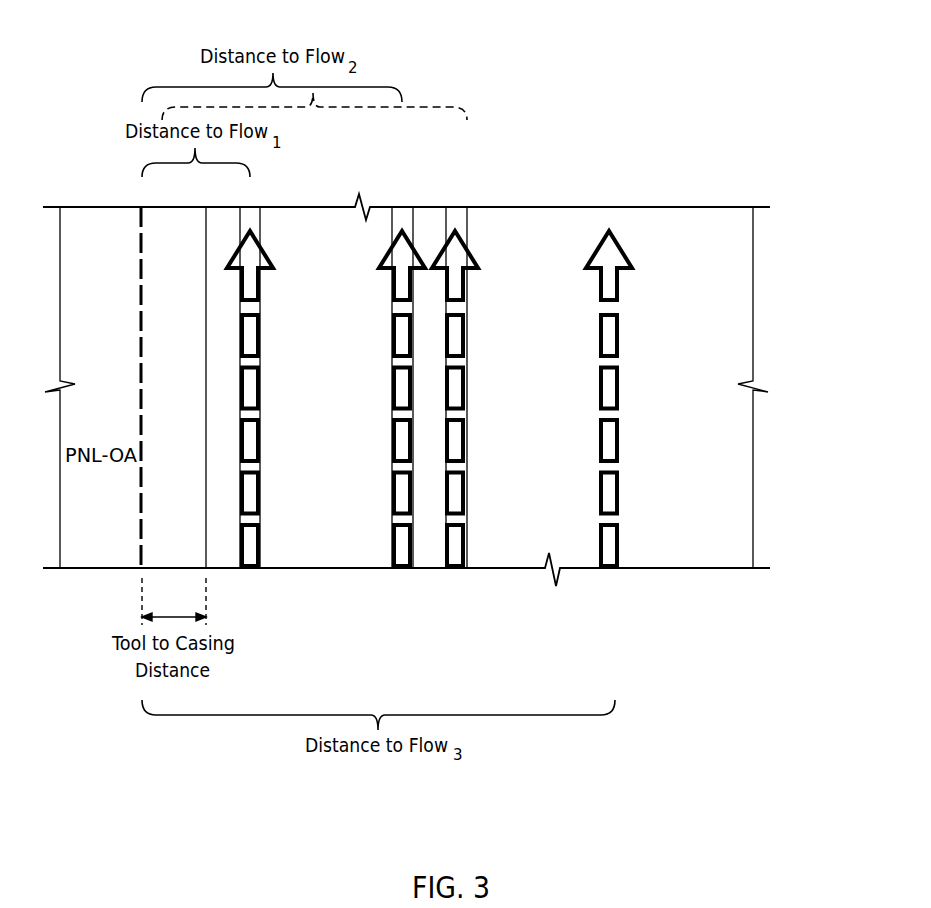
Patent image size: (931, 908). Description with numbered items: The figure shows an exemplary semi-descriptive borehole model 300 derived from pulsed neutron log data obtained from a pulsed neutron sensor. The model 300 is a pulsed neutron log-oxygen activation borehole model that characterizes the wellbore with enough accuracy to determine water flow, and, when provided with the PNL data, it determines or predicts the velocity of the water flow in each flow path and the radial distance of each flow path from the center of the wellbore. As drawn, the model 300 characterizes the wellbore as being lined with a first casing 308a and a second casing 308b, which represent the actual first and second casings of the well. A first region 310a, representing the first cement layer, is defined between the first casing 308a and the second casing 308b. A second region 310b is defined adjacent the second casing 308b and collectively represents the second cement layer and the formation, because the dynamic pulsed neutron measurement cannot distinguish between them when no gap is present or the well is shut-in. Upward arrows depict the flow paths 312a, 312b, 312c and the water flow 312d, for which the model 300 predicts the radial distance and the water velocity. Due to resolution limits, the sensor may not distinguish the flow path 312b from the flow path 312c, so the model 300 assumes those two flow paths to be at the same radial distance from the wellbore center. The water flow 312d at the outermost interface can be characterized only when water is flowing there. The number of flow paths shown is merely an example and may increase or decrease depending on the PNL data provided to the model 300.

The semi-descriptive borehole model 300 is at (758, 72).
The first casing 308a is at (223, 560).
The second casing 308b is at (430, 562).
The first region 310a is at (348, 307).
The second region 310b is at (713, 270).
The flow path 312a is at (255, 568).
The flow path 312b is at (392, 505).
The flow path 312c is at (465, 505).
The water flow 312d is at (617, 540).